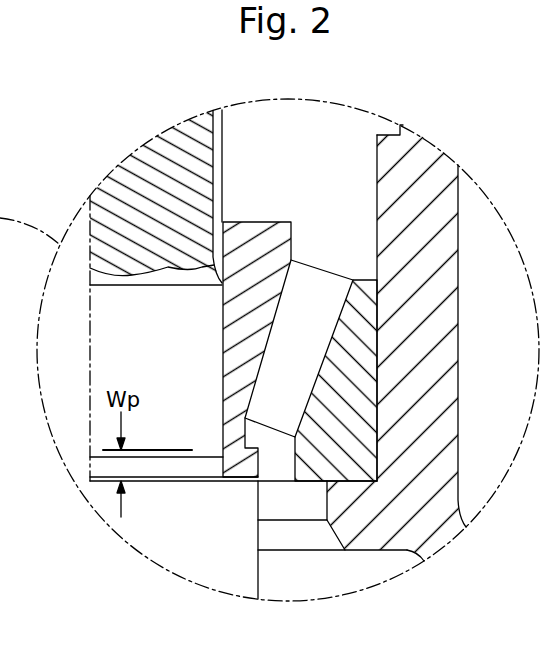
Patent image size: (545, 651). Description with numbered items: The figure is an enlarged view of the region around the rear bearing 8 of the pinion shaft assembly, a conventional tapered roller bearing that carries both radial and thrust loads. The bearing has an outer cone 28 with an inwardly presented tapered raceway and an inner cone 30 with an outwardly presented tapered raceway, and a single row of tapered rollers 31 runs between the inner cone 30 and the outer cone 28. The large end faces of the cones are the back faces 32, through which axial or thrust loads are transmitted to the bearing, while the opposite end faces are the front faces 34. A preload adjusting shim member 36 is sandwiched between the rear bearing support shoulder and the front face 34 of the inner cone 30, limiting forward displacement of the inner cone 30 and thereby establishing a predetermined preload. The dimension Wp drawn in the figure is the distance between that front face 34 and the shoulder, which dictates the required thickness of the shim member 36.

The rear bearing 8 is at (316, 192).
The outer cone 28 is at (357, 422).
The inner cone 30 is at (303, 373).
The tapered rollers 31 is at (300, 373).
The back faces 32 is at (268, 222).
The front faces 34 is at (366, 280).
The preload adjusting shim member 36 is at (241, 473).